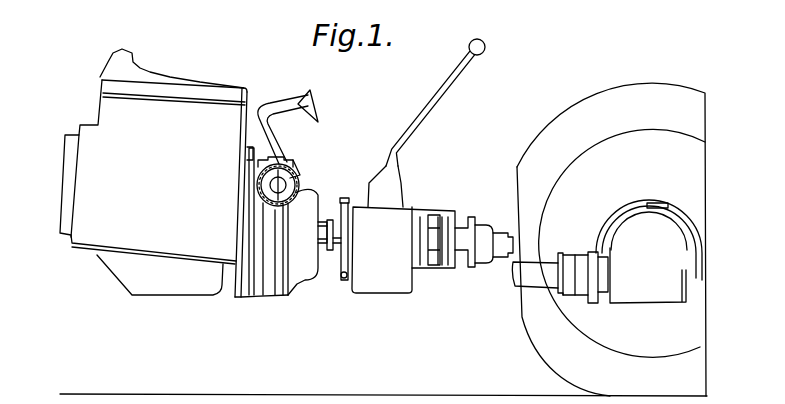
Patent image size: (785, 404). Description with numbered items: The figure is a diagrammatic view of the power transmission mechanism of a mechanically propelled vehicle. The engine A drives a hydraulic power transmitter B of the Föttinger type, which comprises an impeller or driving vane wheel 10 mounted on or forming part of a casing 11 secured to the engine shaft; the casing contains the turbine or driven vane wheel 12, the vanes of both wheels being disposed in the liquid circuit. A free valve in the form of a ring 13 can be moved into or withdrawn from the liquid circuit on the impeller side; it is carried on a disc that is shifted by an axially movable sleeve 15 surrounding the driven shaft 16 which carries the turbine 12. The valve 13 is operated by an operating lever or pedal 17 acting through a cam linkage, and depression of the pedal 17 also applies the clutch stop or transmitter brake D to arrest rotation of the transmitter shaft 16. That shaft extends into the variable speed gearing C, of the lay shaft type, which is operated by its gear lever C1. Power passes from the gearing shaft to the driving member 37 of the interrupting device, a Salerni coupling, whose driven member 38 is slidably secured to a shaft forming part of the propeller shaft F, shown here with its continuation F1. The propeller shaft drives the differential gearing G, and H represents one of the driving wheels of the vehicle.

The impeller or driving vane wheel 10 is at (300, 173).
The casing 11 is at (281, 163).
The turbine or driven vane wheel 12 is at (257, 178).
The valve ring 13 is at (303, 183).
The axially movable sleeve 15 is at (322, 232).
The driven shaft 16 is at (360, 207).
The operating lever or pedal 17 is at (313, 96).
The driving member 37 is at (421, 227).
The driven member 38 is at (443, 232).
The engine A is at (156, 173).
The hydraulic power transmitter B is at (280, 270).
The variable speed gearing C is at (397, 245).
The operating lever C1 is at (433, 107).
The clutch stop or transmitter brake D is at (333, 232).
The propeller shaft F is at (437, 266).
The driven shaft F1 is at (528, 268).
The differential gearing G is at (641, 268).
The driving wheel H is at (611, 239).